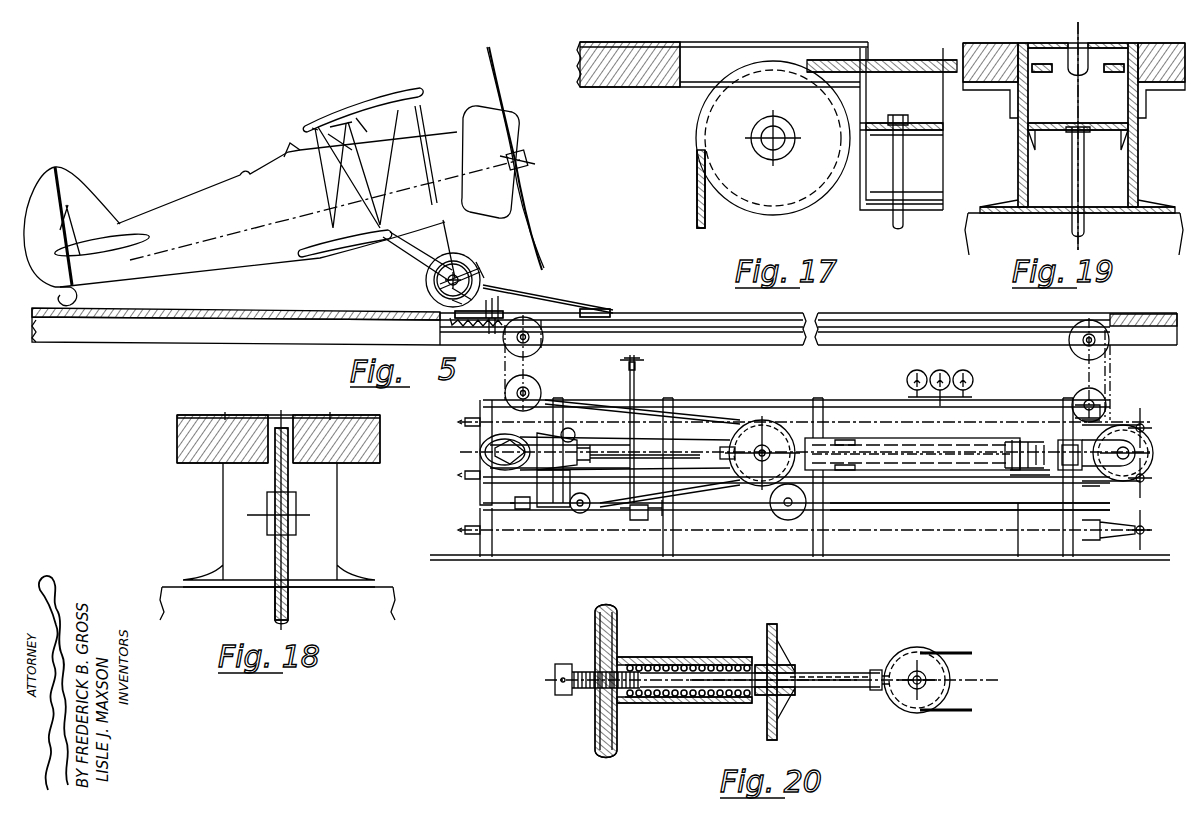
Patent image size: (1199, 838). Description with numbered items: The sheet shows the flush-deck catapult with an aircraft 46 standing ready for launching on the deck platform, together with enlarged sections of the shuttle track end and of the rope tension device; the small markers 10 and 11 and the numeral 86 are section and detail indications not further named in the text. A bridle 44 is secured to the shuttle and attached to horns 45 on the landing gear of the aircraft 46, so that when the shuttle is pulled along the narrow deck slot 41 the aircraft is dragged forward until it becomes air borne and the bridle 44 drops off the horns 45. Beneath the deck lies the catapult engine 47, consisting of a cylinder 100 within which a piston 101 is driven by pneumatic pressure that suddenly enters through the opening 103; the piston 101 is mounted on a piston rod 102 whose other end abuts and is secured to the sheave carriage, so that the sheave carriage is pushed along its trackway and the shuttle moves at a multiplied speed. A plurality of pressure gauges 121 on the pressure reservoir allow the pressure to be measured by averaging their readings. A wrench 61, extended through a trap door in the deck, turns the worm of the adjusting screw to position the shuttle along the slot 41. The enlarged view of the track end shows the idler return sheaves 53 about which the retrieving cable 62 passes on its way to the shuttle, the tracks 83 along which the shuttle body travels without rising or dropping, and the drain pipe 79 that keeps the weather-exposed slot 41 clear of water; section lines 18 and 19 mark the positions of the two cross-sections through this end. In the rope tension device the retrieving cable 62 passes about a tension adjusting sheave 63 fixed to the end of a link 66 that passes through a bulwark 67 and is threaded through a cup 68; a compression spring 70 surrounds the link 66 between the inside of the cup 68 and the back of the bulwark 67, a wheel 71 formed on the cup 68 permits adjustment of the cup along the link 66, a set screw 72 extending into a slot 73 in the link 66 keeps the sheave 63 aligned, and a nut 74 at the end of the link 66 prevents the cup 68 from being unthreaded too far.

In FIG. 5, the section line 10 is at (502, 360).
In FIG. 5, the section line 11 is at (628, 353).
In FIG. 17, the section line 18— 18 is at (690, 250).
In FIG. 17, the section line 19— 19 is at (939, 250).
In FIG. 19, the slot 41 is at (1088, 45).
In FIG. 5, the bridle 44 is at (462, 270).
In FIG. 5, the horns 45 is at (432, 288).
In FIG. 5, the aircraft 46 is at (205, 200).
In FIG. 5, the catapult engine 47 is at (966, 503).
In FIG. 17, the idler return sheaves 53 is at (803, 205).
In FIG. 18, the idler return sheaves 53 is at (291, 548).
In FIG. 5, the wrench 61 is at (638, 404).
In FIG. 17, the retrieving cable 62 is at (708, 213).
In FIG. 18, the retrieving cable 62 is at (292, 612).
In FIG. 20, the retrieving cable 62 is at (960, 650).
In FIG. 20, the tension adjusting sheave 63 is at (942, 677).
In FIG. 20, the link 66 is at (876, 690).
In FIG. 20, the bulwark 67 is at (778, 734).
In FIG. 20, the cup 68 is at (676, 705).
In FIG. 20, the compression spring 70 is at (680, 662).
In FIG. 20, the wheel 71 is at (595, 745).
In FIG. 20, the set screw 72 is at (785, 675).
In FIG. 20, the slot 73 is at (800, 673).
In FIG. 20, the nut 74 is at (563, 697).
In FIG. 17, the drain pipe 79 is at (893, 220).
In FIG. 19, the drain pipe 79 is at (1072, 175).
In FIG. 19, the tracks 83 is at (1113, 74).
In FIG. 5, the hold-back hook 86 is at (440, 280).
In FIG. 5, the cylinder 100 is at (898, 438).
In FIG. 5, the piston 101 is at (1024, 440).
In FIG. 5, the piston rod 102 is at (1023, 468).
In FIG. 5, the opening 103 is at (1060, 442).
In FIG. 5, the pressure gauges 121 is at (925, 378).